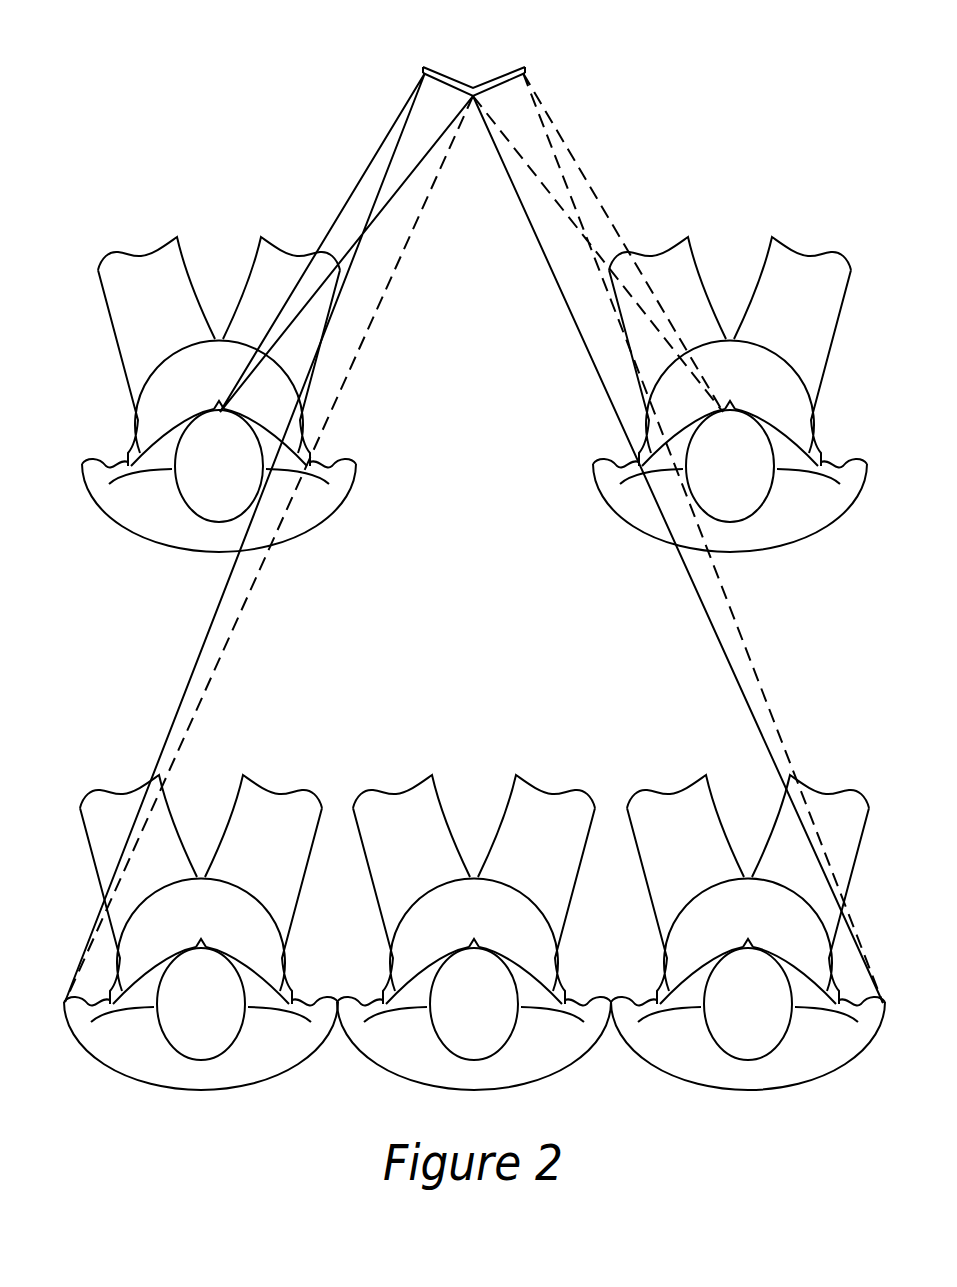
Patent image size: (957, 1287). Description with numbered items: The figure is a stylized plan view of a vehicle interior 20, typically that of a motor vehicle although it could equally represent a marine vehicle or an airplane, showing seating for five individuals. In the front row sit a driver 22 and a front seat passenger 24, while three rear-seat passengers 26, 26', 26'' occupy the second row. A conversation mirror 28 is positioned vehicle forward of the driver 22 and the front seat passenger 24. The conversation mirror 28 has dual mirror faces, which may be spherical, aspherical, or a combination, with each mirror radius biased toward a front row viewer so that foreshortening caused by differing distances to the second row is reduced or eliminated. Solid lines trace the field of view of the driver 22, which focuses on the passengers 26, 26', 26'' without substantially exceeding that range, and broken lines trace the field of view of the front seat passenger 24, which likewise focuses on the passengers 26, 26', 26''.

The vehicle interior 20 is at (205, 197).
The driver 22 is at (138, 422).
The front seat passenger 24 is at (813, 422).
The rear-seat passenger 26 is at (201, 952).
The rear-seat passenger 26' is at (474, 952).
The rear-seat passenger 26'' is at (748, 952).
The conversation mirror 28 is at (455, 81).